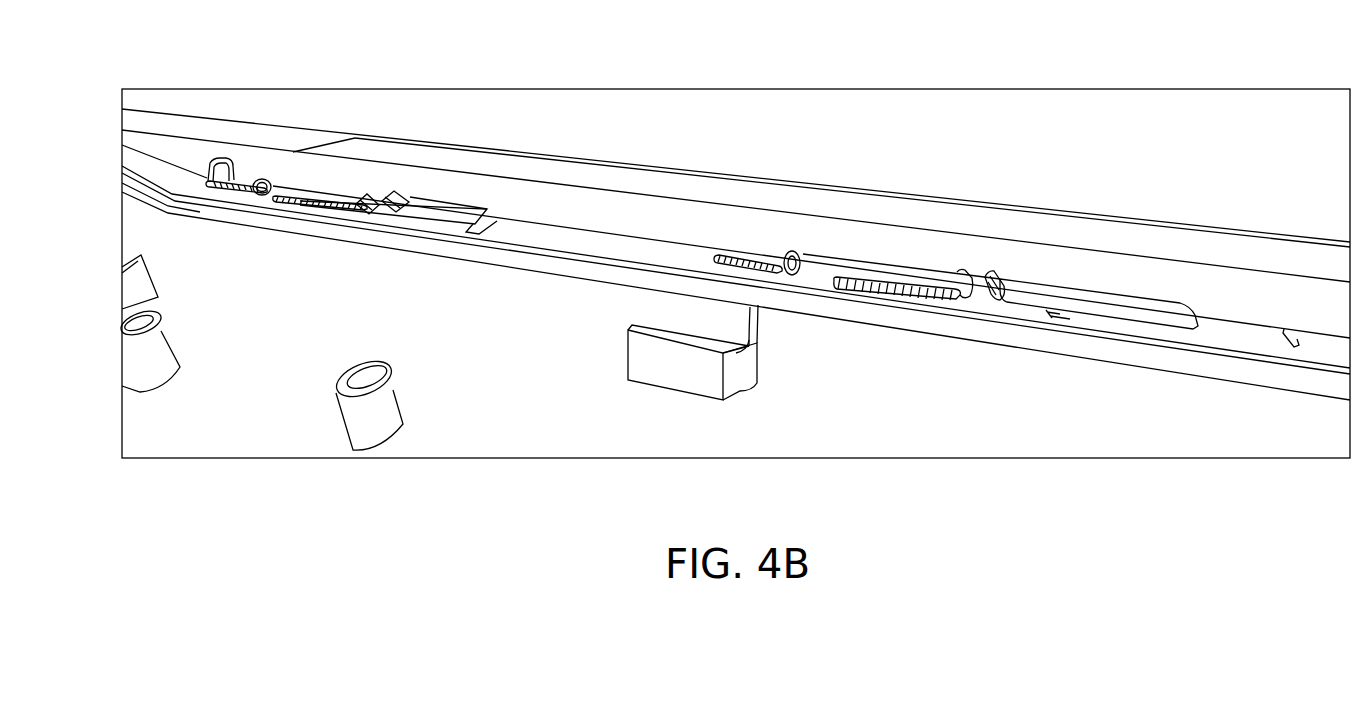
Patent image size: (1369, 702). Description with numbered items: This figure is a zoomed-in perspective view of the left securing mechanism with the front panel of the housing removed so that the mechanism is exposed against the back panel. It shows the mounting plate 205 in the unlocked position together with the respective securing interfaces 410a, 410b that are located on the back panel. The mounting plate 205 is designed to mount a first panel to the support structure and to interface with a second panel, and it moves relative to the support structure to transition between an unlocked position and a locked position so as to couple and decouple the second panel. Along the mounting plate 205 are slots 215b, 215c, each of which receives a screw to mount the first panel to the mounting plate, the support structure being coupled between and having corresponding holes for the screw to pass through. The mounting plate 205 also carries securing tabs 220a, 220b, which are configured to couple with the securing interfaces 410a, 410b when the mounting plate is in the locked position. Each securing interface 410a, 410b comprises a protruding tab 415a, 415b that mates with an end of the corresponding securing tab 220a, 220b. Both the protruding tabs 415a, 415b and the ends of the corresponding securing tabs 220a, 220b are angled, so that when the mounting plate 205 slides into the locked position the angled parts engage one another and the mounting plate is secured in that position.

The mounting plate 205 is at (148, 150).
The slot 215b is at (243, 192).
The slot 215c is at (747, 255).
The securing tab 220a is at (333, 194).
The securing tab 220b is at (897, 266).
The protruding tab 415a is at (390, 195).
The protruding tab 415b is at (1000, 277).
The securing interface 410a is at (452, 212).
The securing interface 410b is at (1083, 295).